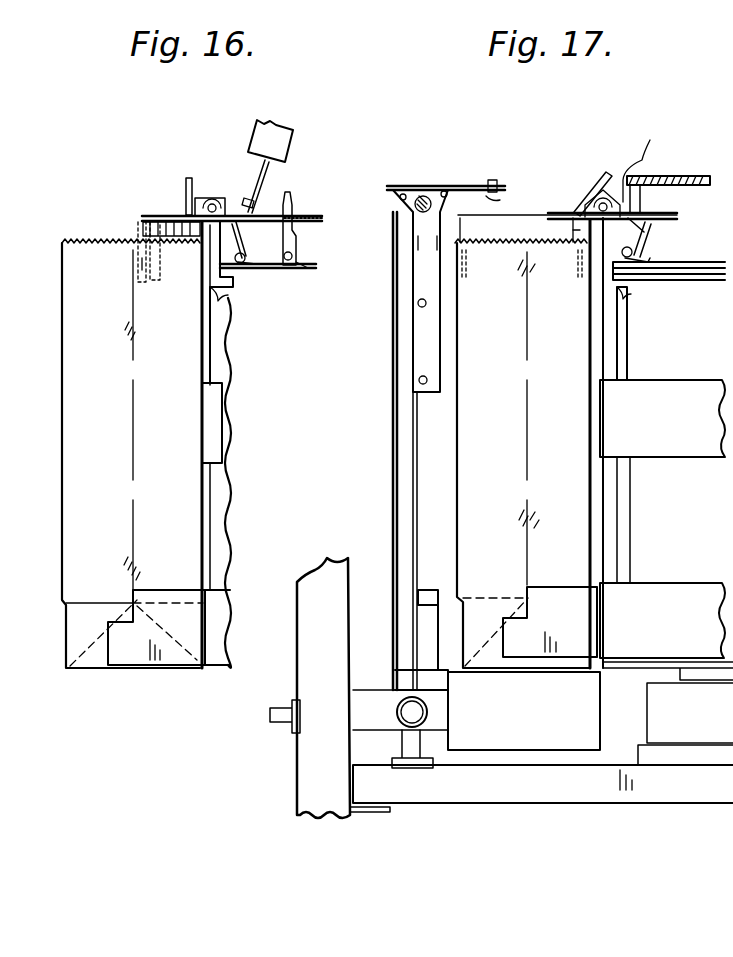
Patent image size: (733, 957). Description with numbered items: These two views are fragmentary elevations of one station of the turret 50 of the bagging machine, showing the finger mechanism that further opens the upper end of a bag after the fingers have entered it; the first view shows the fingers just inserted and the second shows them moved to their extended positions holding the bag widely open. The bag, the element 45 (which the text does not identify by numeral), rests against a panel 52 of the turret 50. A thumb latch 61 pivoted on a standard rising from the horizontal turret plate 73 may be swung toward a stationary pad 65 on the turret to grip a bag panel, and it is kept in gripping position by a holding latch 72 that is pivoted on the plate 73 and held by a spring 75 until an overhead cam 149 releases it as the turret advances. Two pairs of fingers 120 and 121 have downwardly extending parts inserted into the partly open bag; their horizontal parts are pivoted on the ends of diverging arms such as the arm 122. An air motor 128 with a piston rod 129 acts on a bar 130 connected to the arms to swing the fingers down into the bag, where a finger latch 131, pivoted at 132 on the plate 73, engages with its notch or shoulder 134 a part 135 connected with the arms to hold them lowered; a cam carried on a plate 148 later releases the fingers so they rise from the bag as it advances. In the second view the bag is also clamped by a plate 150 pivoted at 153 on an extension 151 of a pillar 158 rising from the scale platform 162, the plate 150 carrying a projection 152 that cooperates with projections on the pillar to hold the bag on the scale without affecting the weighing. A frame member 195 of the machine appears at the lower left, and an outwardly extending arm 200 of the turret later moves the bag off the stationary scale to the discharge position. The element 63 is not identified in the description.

In FIG. 16, the body / housing 45 is at (70, 338).
In FIG. 17, the body / housing 45 is at (468, 440).
In FIG. 16, the turret 50 is at (298, 390).
In FIG. 17, the turret 50 is at (706, 372).
In FIG. 16, the panel 52 is at (228, 440).
In FIG. 17, the panel 52 is at (680, 450).
In FIG. 16, the thumb latch 61 is at (188, 178).
In FIG. 17, the thumb latch 61 is at (606, 180).
In FIG. 16, the bracket 63 is at (232, 302).
In FIG. 17, the bracket 63 is at (622, 300).
In FIG. 16, the stationary pad 65 is at (200, 262).
In FIG. 17, the stationary pad 65 is at (590, 289).
In FIG. 17, the holding latch 72 is at (650, 228).
In FIG. 16, the horizontal plate 73 is at (296, 270).
In FIG. 17, the horizontal plate 73 is at (692, 278).
In FIG. 16, the spring 75 is at (246, 270).
In FIG. 17, the spring 75 is at (650, 262).
In FIG. 16, the fingers 120 is at (140, 258).
In FIG. 17, the fingers 120 is at (460, 230).
In FIG. 16, the fingers 121 is at (150, 286).
In FIG. 17, the fingers 121 is at (572, 231).
In FIG. 16, the diverging arm 122 is at (144, 214).
In FIG. 17, the diverging arm 122 is at (569, 212).
In FIG. 16, the air motor 128 is at (288, 126).
In FIG. 16, the piston rod 129 is at (246, 164).
In FIG. 16, the bar 130 is at (246, 200).
In FIG. 16, the finger latch 131 is at (293, 232).
In FIG. 16, the pivot 132 is at (295, 261).
In FIG. 16, the notch or shoulder 134 is at (292, 198).
In FIG. 16, the part 135 is at (301, 212).
In FIG. 17, the plate 148 is at (690, 176).
In FIG. 17, the overhead cam 149 is at (650, 140).
In FIG. 17, the clamping plate 150 is at (470, 186).
In FIG. 17, the extension 151 is at (430, 318).
In FIG. 17, the projection 152 is at (492, 193).
In FIG. 17, the pivot 153 is at (424, 196).
In FIG. 17, the pillar 158 is at (395, 511).
In FIG. 17, the scale platform 162 is at (519, 766).
In FIG. 17, the frame member 195 is at (340, 573).
In FIG. 16, the outwardly extending arm 200 is at (120, 665).
In FIG. 17, the outwardly extending arm 200 is at (567, 587).